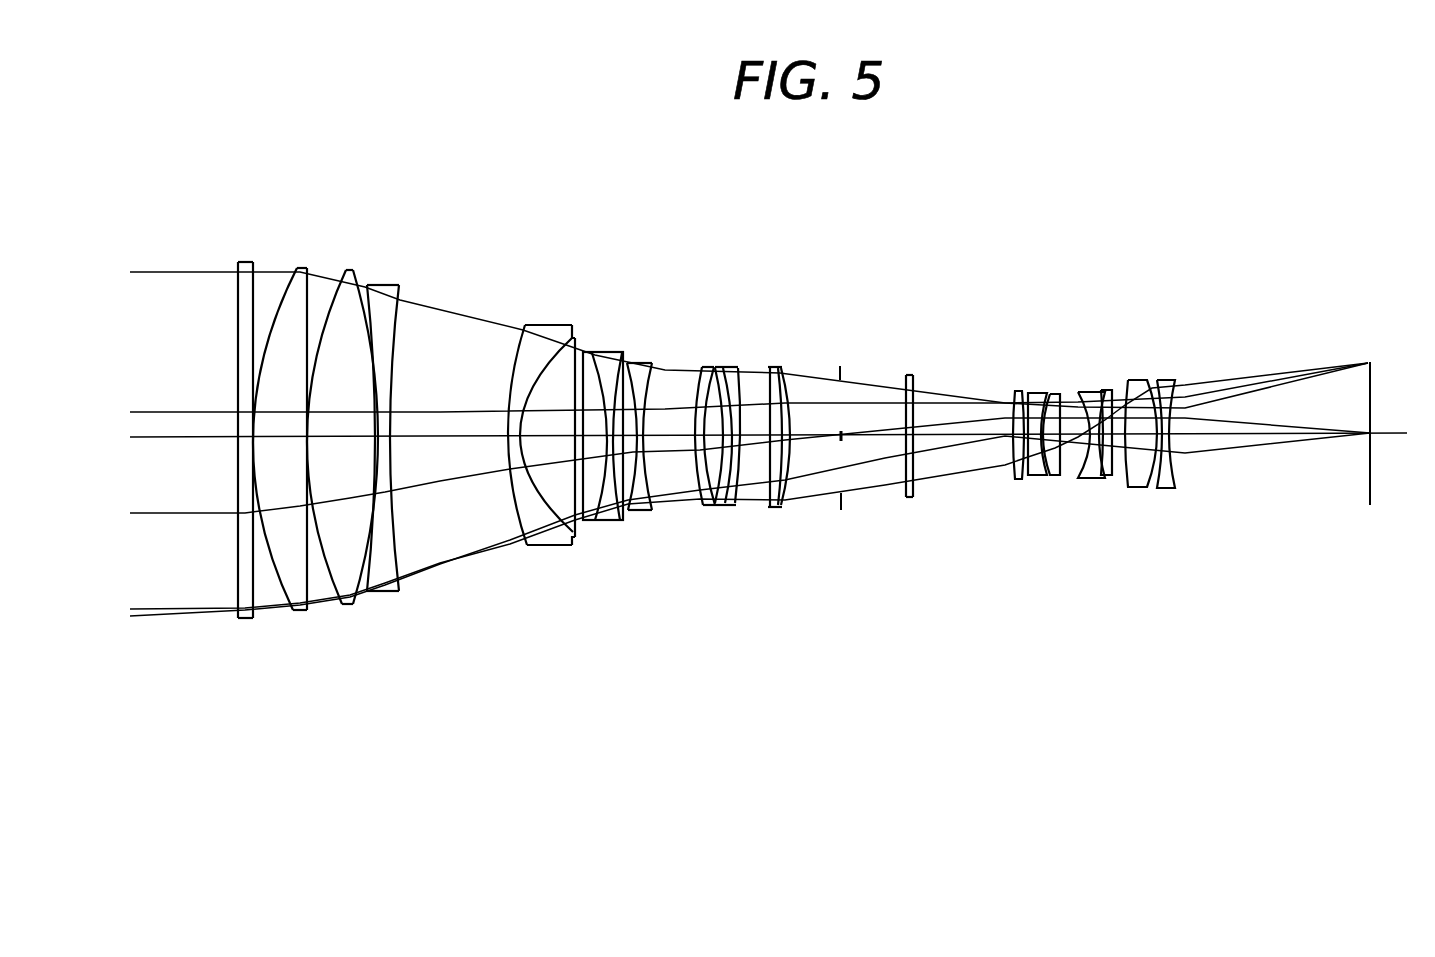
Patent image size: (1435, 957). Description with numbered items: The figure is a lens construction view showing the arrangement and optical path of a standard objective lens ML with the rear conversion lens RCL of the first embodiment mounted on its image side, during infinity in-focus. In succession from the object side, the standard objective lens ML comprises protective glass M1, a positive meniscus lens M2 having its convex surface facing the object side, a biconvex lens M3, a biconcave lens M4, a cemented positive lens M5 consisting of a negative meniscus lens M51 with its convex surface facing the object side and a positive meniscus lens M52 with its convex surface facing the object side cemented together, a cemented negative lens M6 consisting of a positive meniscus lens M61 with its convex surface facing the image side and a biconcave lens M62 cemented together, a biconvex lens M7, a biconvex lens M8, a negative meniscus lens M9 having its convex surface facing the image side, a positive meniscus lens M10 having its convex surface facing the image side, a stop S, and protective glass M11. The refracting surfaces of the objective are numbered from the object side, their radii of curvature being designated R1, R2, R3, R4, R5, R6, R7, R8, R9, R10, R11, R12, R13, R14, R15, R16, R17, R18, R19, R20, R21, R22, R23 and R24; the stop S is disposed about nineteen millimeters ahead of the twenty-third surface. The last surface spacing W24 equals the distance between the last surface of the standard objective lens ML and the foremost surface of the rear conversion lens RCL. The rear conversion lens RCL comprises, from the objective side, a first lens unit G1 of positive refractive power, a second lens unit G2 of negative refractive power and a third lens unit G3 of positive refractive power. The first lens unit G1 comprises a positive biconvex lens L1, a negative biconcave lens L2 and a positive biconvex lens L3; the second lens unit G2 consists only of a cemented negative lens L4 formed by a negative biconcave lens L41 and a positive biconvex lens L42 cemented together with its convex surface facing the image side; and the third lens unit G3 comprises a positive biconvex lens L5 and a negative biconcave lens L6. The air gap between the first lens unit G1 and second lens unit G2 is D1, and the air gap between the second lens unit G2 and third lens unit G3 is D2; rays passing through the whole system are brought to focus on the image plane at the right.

The standard objective lens ML is at (988, 198).
The rear conversion lens RCL is at (1265, 198).
The protective glass M1 is at (245, 262).
The positive meniscus lens M2 is at (298, 268).
The biconvex lens M3 is at (350, 270).
The biconcave lens M4 is at (385, 285).
The cemented positive lens M5 is at (598, 252).
The negative meniscus lens M51 is at (525, 327).
The positive meniscus lens M52 is at (566, 326).
The cemented negative lens M6 is at (735, 252).
The positive meniscus lens M61 is at (597, 352).
The biconcave lens M62 is at (628, 362).
The biconvex lens M7 is at (705, 365).
The biconvex lens M8 is at (727, 365).
The negative meniscus lens M9 is at (773, 365).
The positive meniscus lens M10 is at (777, 365).
The protective glass M11 is at (908, 375).
The stop S is at (840, 368).
The first lens unit G1 is at (975, 253).
The second lens unit G2 is at (1137, 280).
The third lens unit G3 is at (1270, 253).
The positive biconvex lens L1 is at (1018, 390).
The negative biconcave lens L2 is at (1036, 393).
The positive biconvex lens L3 is at (1055, 394).
The cemented negative lens L4 is at (1180, 322).
The negative biconcave lens L41 is at (1086, 392).
The positive biconvex lens L42 is at (1106, 390).
The positive biconvex lens L5 is at (1136, 380).
The negative biconcave lens L6 is at (1165, 380).
The radius of curvature of first surface R1 is at (237, 567).
The radius of curvature of second surface R2 is at (255, 585).
The radius of curvature of third surface R3 is at (283, 585).
The radius of curvature of fourth surface R4 is at (307, 590).
The radius of curvature of fifth surface R5 is at (335, 590).
The radius of curvature of sixth surface R6 is at (360, 573).
The radius of curvature of seventh surface R7 is at (387, 573).
The radius of curvature of eighth surface R8 is at (410, 583).
The radius of curvature of ninth surface R9 is at (508, 510).
The radius of curvature of tenth surface R10 is at (545, 530).
The radius of curvature of eleventh surface R11 is at (560, 540).
The radius of curvature of twelfth surface R12 is at (582, 530).
The radius of curvature of thirteenth surface R13 is at (598, 522).
The radius of curvature of fourteenth surface R14 is at (620, 522).
The radius of curvature of fifteenth surface R15 is at (650, 515).
The radius of curvature of sixteenth surface R16 is at (693, 475).
The radius of curvature of seventeenth surface R17 is at (708, 507).
The radius of curvature of eighteenth surface R18 is at (716, 510).
The radius of curvature of nineteenth surface R19 is at (738, 507).
The radius of curvature of twentieth surface R20 is at (770, 508).
The radius of curvature of twenty-first surface R21 is at (780, 507).
The radius of curvature of twenty-second surface R22 is at (789, 492).
The radius of curvature of twenty-third surface R23 is at (906, 495).
The radius of curvature of twenty-fourth surface R24 is at (913, 480).
The last surface spacing W24 is at (963, 440).
The air gap between first and second lens units D1 is at (1076, 436).
The air gap between second and third lens units D2 is at (1118, 436).